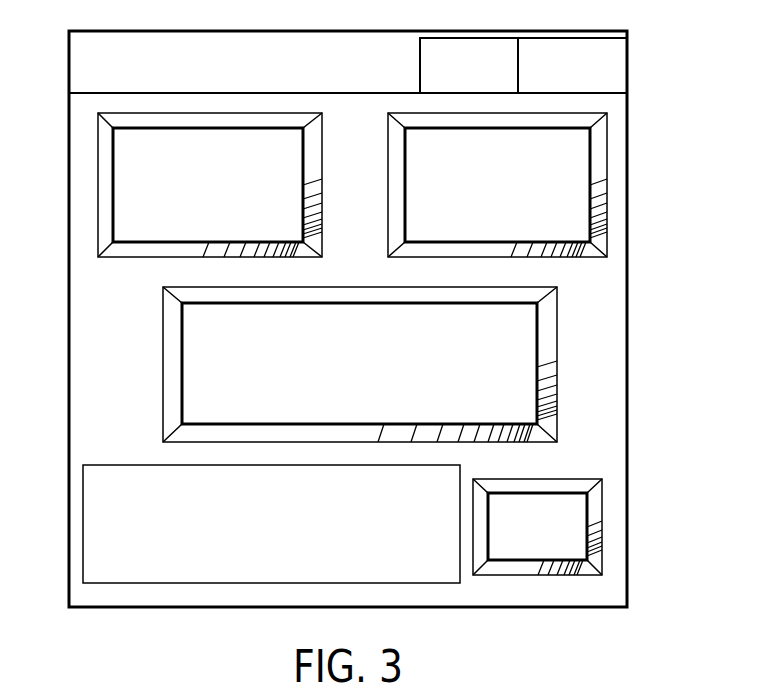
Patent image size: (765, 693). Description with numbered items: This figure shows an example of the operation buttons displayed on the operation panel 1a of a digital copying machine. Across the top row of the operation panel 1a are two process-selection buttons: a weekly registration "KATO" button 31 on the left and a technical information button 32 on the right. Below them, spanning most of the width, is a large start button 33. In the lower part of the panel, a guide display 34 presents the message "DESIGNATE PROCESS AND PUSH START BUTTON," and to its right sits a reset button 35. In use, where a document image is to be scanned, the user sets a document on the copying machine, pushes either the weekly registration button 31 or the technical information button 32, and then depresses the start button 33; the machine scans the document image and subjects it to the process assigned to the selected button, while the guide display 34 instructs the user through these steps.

The operation panel 1a is at (627, 355).
The weekly registration "KATO" button 31 is at (98, 183).
The technical information button 32 is at (607, 155).
The start button 33 is at (163, 366).
The guide display 34 is at (83, 523).
The reset button 35 is at (596, 528).